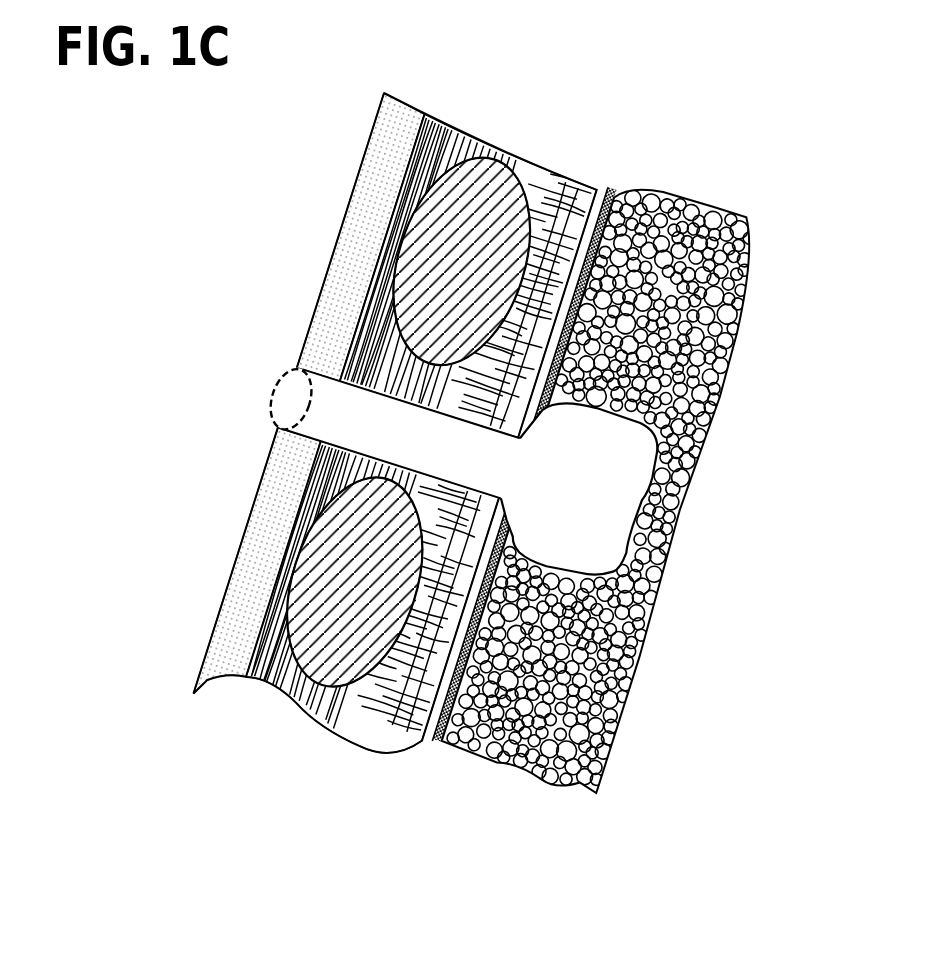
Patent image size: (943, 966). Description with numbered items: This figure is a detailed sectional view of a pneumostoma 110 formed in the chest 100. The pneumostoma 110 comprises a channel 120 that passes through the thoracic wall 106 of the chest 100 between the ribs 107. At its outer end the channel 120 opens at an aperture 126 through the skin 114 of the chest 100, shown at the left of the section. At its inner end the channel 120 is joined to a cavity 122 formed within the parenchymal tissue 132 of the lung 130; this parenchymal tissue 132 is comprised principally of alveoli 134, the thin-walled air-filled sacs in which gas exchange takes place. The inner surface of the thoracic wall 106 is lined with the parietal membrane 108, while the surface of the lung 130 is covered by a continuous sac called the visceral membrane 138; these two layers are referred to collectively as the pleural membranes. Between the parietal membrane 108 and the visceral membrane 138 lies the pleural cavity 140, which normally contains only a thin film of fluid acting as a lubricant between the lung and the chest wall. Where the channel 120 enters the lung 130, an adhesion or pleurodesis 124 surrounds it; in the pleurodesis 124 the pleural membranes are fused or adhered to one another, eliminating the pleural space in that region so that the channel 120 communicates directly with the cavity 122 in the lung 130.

The chest 100 is at (206, 583).
The thoracic wall 106 is at (278, 756).
The ribs 107 is at (427, 260).
The parietal membrane 108 is at (603, 187).
The pneumostoma 110 is at (234, 386).
The skin 114 is at (220, 623).
The channel 120 is at (420, 452).
The cavity 122 is at (612, 508).
The pleurodesis 124 is at (537, 382).
The aperture 126 is at (275, 423).
The lung 130 is at (525, 819).
The parenchymal tissue 132 is at (677, 218).
The alveoli 134 is at (697, 267).
The visceral membrane 138 is at (613, 197).
The pleural cavity 140 is at (428, 762).